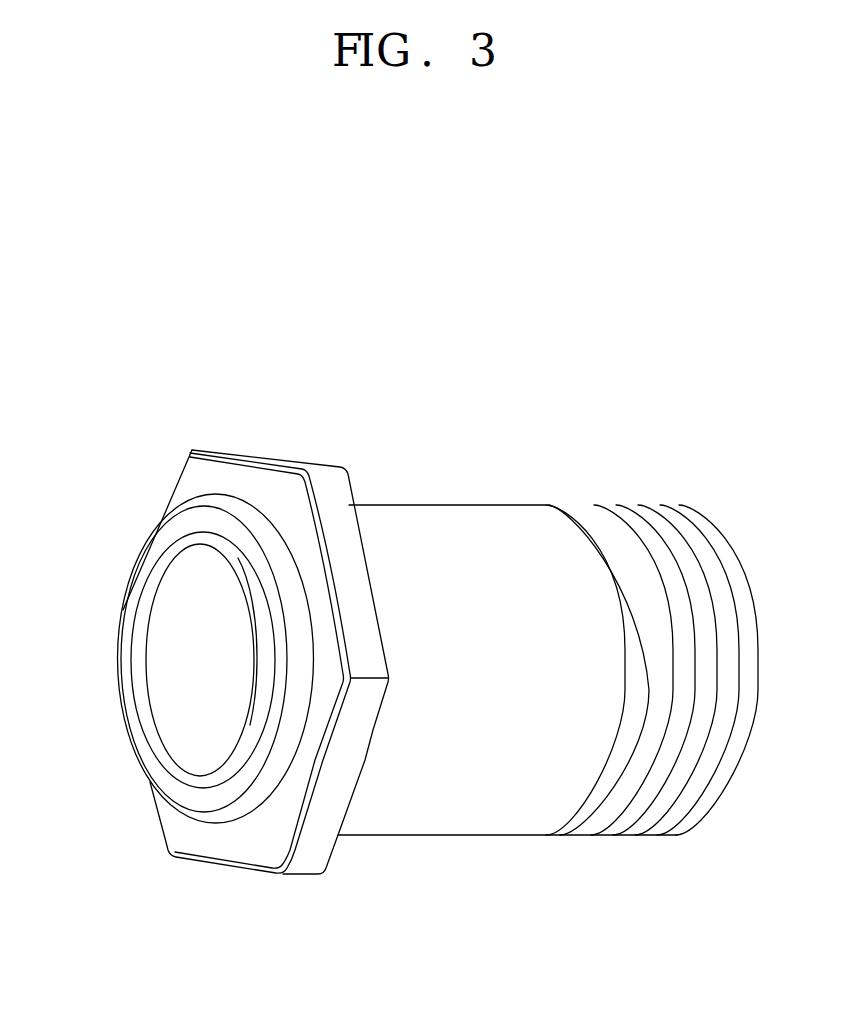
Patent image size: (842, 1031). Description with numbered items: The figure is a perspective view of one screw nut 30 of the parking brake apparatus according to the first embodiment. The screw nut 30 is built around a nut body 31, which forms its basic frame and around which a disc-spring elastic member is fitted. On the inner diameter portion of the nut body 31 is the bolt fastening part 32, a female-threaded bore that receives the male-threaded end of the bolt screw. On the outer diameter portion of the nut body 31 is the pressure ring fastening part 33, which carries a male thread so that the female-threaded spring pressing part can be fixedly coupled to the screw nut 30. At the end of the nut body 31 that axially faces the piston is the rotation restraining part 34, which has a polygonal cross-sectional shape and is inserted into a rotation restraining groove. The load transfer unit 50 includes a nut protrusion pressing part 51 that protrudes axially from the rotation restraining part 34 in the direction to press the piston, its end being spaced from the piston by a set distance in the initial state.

The screw nut 30 is at (531, 490).
The nut body 31 is at (457, 552).
The bolt fastening part 32 is at (254, 673).
The pressure ring fastening part 33 is at (655, 543).
The rotation restraining part 34 is at (342, 558).
The load transfer unit 50 is at (272, 533).
The nut protrusion pressing part 51 is at (221, 602).